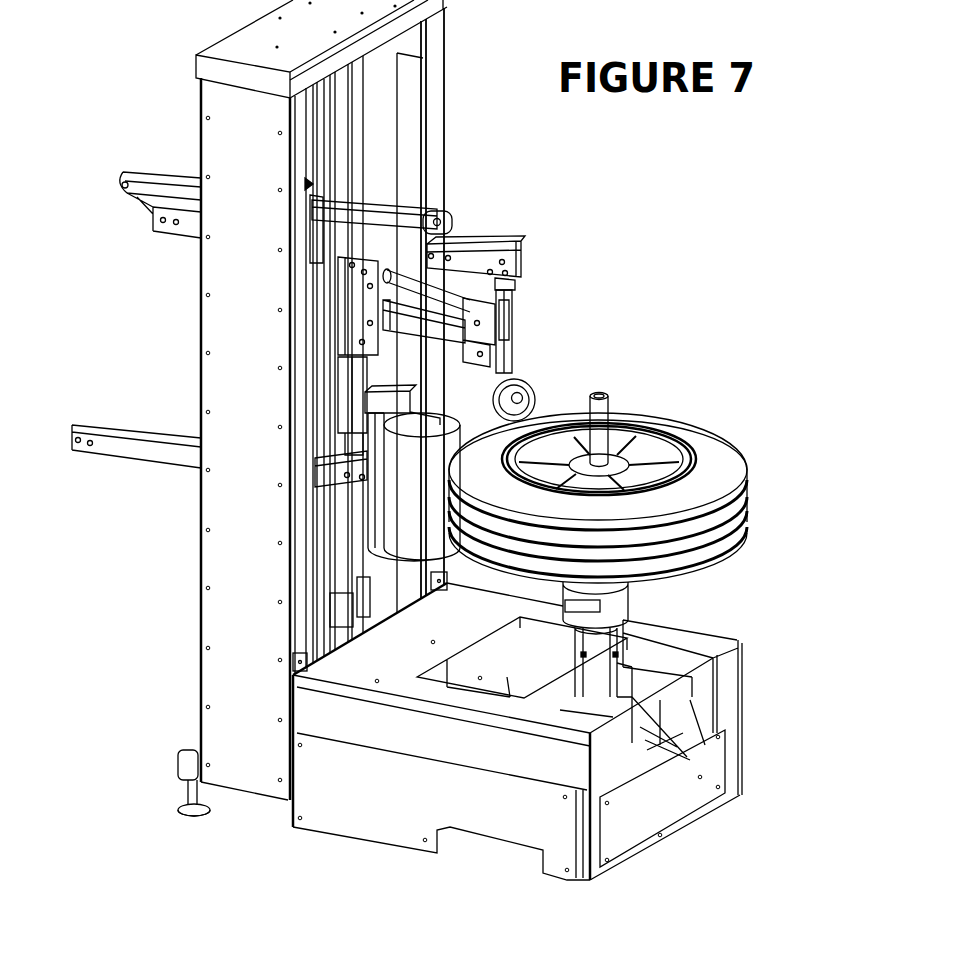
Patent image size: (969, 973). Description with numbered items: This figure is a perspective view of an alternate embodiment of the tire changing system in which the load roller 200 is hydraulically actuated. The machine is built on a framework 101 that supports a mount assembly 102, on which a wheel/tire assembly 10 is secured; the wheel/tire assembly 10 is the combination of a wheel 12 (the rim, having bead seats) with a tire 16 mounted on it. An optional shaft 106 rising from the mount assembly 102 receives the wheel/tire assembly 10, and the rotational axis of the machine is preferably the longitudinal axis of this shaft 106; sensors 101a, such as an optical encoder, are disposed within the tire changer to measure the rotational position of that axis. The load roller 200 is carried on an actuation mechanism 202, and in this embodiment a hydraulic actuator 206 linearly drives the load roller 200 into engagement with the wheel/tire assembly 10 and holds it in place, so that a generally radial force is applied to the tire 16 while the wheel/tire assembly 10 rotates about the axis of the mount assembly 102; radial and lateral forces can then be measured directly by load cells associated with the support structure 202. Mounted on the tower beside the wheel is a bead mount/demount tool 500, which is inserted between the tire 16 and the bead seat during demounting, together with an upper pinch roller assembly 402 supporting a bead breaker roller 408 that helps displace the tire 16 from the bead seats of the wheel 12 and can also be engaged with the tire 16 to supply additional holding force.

The wheel/tire assembly 10 is at (708, 418).
The wheel 12 is at (627, 437).
The tire 16 is at (693, 480).
The framework 101 is at (353, 773).
The sensors 101a is at (580, 604).
The mount assembly 102 is at (610, 594).
The shaft 106 is at (603, 423).
The load roller 200 is at (400, 514).
The actuation mechanism 202 is at (55, 467).
The hydraulic actuator 206 is at (152, 402).
The upper pinch roller assembly 402 is at (536, 348).
The bead breaker roller 408 is at (532, 409).
The bead mount/demount tool 500 is at (513, 318).